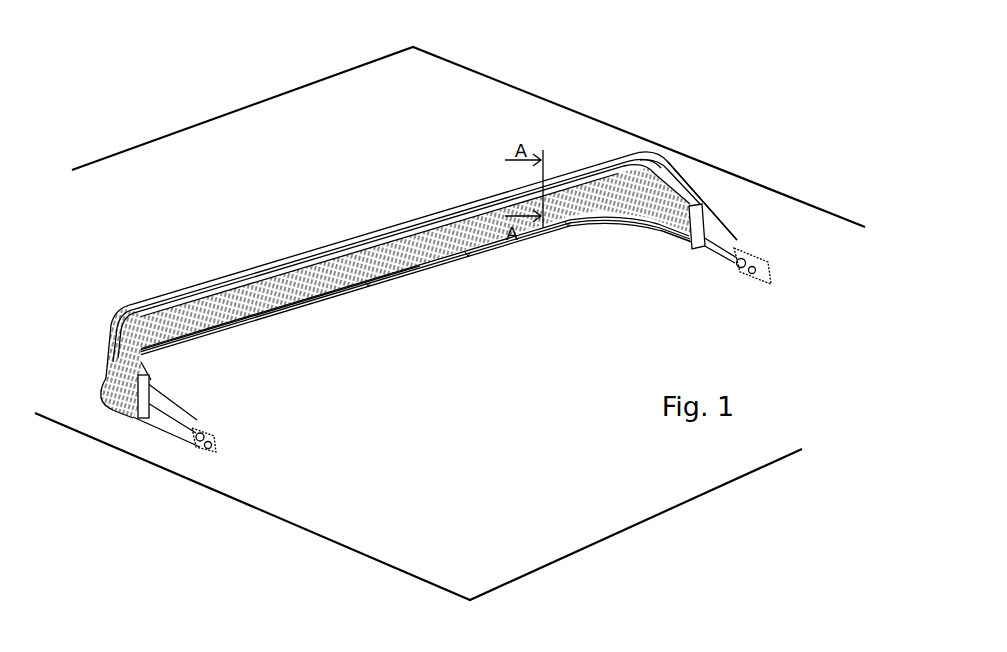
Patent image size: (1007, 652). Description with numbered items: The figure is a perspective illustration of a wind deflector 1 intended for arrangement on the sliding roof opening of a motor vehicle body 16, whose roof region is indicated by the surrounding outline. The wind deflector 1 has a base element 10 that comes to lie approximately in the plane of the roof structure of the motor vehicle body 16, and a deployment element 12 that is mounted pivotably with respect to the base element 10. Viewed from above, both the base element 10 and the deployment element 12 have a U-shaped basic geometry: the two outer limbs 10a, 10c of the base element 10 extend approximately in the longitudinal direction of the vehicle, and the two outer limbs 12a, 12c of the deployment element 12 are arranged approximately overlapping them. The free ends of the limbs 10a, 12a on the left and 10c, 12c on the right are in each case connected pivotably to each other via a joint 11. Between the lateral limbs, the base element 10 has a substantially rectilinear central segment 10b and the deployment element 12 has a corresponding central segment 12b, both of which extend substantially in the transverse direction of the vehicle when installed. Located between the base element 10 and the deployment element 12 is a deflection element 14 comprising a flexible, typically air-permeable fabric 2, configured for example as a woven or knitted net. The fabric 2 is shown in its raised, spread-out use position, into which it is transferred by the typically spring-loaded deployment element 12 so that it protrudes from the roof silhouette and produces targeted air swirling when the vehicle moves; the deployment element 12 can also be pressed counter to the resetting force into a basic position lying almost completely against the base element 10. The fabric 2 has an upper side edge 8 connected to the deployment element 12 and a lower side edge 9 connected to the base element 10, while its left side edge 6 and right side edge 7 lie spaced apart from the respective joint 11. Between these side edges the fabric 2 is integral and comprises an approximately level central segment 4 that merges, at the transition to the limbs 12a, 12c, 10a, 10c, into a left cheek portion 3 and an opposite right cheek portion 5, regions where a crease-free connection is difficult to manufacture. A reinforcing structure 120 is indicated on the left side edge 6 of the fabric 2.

The wind deflector 1 is at (310, 159).
The fabric 2 is at (350, 255).
The left cheek portion 3 is at (123, 390).
The central segment 4 is at (240, 302).
The right cheek portion 5 is at (674, 200).
The left side edge 6 is at (148, 388).
The right side edge 7 is at (695, 233).
The upper side edge 8 is at (297, 272).
The lower side edge 9 is at (345, 283).
The base element 10 is at (449, 299).
The outer limb of the base element 10a is at (133, 415).
The central segment of the base element 10b is at (283, 308).
The outer limb of the base element 10c is at (660, 228).
The joint 11 is at (205, 447).
The deployment element 12 is at (393, 184).
The outer limb of the deployment element 12a is at (133, 328).
The central segment of the deployment element 12b is at (493, 193).
The outer limb of the deployment element 12c is at (700, 200).
The deflection element 14 is at (451, 219).
The motor vehicle body 16 is at (513, 103).
The reinforcing structure 120 is at (152, 443).